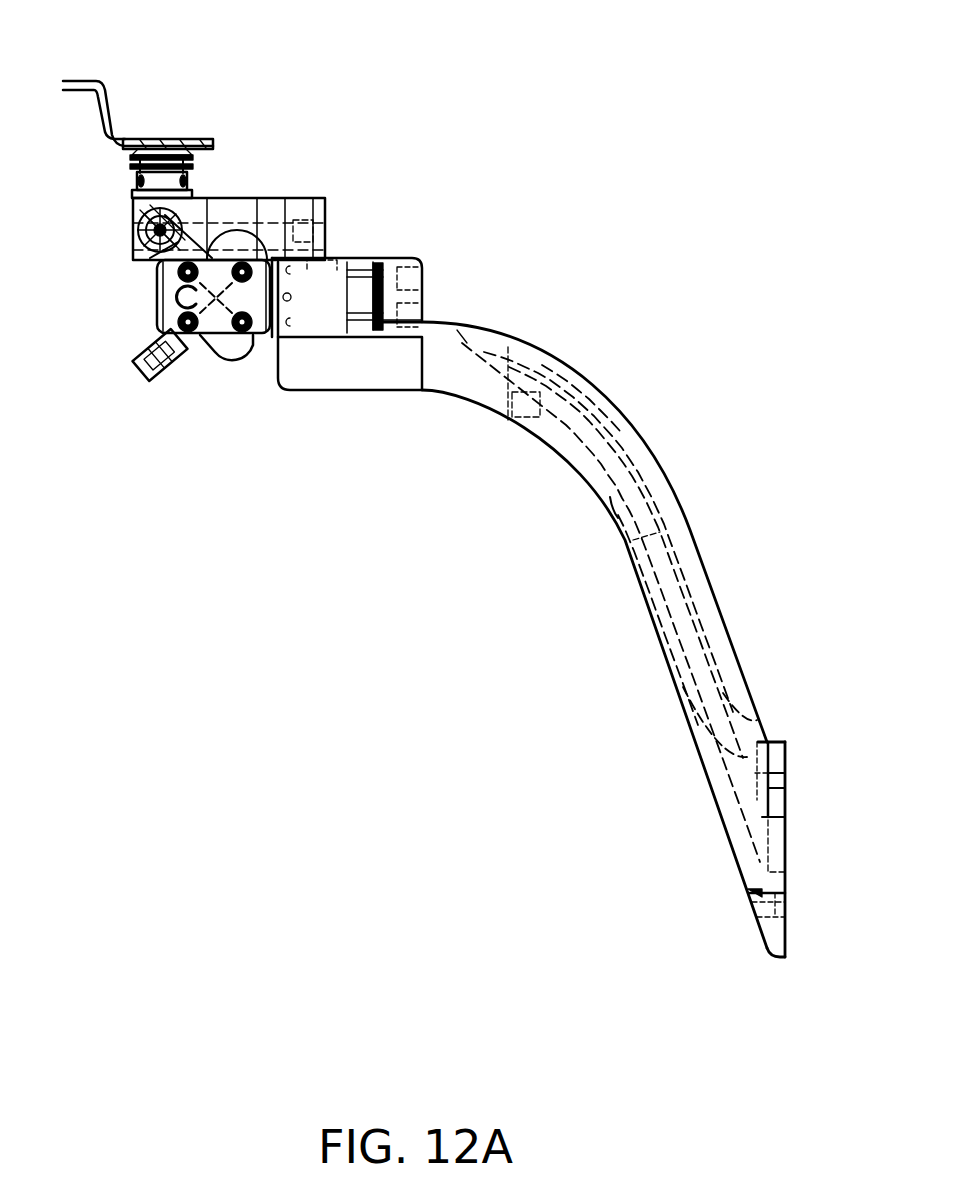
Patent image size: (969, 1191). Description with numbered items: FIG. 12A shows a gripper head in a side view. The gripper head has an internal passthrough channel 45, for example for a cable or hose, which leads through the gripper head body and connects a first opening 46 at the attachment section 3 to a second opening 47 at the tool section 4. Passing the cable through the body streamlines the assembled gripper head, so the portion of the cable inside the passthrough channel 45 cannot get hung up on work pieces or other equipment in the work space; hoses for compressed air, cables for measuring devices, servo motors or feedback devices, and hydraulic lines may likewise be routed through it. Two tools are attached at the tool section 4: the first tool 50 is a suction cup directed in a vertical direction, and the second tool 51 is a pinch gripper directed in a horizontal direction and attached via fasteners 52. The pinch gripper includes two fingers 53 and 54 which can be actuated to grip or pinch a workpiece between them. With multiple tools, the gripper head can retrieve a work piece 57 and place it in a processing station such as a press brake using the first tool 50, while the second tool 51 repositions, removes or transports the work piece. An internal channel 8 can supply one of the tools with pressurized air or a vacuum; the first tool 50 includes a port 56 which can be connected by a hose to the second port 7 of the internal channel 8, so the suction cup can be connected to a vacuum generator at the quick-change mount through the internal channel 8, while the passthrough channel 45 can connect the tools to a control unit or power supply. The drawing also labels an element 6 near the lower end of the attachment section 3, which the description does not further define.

The attachment section 3 is at (806, 945).
The tool section 4 is at (315, 410).
The foot plate 6 is at (785, 853).
The second port 7 is at (528, 345).
The internal channel 8 is at (762, 830).
The internal passthrough channel 45 is at (680, 655).
The first opening 46 is at (765, 735).
The second opening 47 is at (483, 327).
The first tool 50 is at (200, 167).
The second tool 51 is at (193, 343).
The fasteners 52 is at (452, 308).
The finger 53 is at (137, 255).
The finger 54 is at (140, 380).
The port 56 is at (326, 230).
The work piece 57 is at (165, 140).